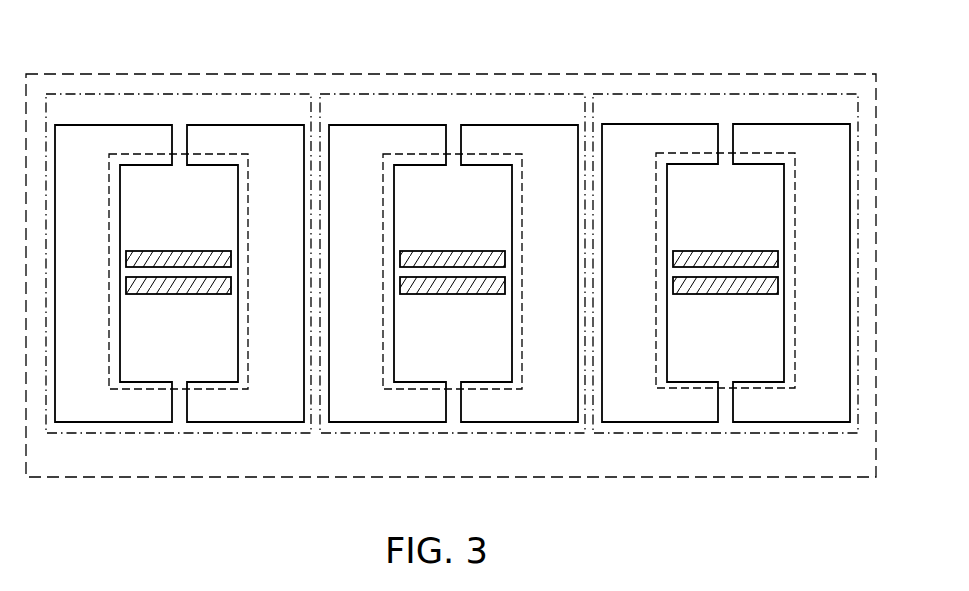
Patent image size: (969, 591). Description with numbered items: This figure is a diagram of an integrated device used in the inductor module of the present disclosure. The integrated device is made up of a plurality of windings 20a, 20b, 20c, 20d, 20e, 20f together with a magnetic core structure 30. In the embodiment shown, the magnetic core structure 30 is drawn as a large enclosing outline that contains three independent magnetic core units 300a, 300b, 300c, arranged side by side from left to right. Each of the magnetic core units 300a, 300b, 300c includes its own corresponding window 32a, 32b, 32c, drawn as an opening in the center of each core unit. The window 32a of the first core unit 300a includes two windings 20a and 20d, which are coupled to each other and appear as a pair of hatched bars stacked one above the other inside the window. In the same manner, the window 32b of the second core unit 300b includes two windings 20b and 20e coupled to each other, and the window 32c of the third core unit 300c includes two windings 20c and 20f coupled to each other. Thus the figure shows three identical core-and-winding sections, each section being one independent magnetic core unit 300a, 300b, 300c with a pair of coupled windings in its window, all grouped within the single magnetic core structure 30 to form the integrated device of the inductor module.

The magnetic core structure 30 is at (748, 75).
The magnetic core unit 300a is at (100, 93).
The magnetic core unit 300b is at (370, 93).
The magnetic core unit 300c is at (643, 93).
The window 32a is at (220, 153).
The window 32b is at (493, 153).
The window 32c is at (767, 153).
The winding 20a is at (127, 252).
The winding 20b is at (400, 252).
The winding 20c is at (673, 252).
The winding 20d is at (127, 288).
The winding 20e is at (400, 288).
The winding 20f is at (673, 288).